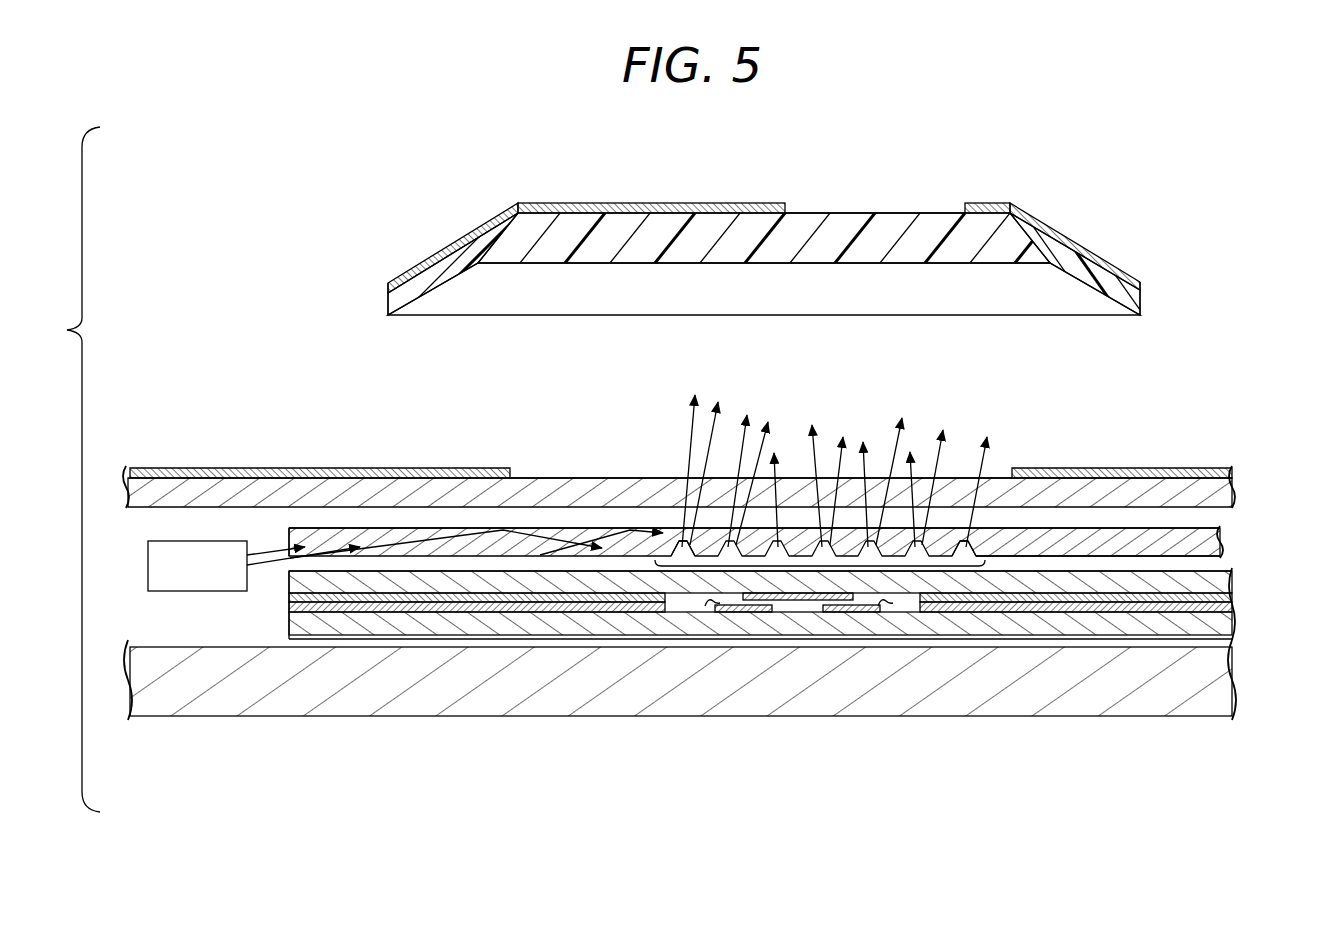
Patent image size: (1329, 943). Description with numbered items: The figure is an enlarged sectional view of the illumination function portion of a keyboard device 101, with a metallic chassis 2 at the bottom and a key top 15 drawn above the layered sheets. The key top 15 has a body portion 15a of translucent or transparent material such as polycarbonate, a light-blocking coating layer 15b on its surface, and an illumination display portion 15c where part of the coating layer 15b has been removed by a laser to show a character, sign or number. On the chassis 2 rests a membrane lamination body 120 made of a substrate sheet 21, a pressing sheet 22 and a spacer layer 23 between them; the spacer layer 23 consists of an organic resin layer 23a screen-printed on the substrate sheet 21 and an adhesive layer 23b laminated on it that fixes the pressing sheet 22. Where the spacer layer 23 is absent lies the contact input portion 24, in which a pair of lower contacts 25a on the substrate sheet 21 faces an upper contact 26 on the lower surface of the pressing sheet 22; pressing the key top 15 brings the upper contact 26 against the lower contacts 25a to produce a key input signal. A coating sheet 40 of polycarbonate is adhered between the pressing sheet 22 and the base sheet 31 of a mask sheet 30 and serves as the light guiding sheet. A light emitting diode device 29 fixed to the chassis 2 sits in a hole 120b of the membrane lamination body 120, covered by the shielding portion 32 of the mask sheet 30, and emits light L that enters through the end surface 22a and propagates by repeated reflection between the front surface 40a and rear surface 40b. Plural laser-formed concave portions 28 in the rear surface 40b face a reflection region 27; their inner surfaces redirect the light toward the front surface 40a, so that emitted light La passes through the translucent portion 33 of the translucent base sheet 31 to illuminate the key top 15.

The chassis 2 is at (368, 702).
The key top 15 is at (764, 246).
The body portion 15a is at (918, 243).
The coating layer 15b is at (660, 203).
The illumination display portion 15c is at (862, 203).
The substrate sheet 21 is at (1195, 625).
The pressing sheet 22 is at (1170, 578).
The end surface 22a is at (287, 540).
The spacer layer 23 is at (760, 707).
The organic resin layer 23a is at (1095, 605).
The adhesive layer 23b is at (1052, 597).
The contact input portion 24 is at (907, 602).
The lower contact 25a is at (705, 603).
The upper contact 26 is at (780, 597).
The reflection region 27 is at (820, 567).
The concave portion 28 is at (682, 548).
The light emitting diode device 29 is at (198, 585).
The mask sheet 30 is at (705, 451).
The base sheet 31 is at (1168, 478).
The shielding portion 32 is at (456, 468).
The translucent portion 33 is at (585, 478).
The coating sheet 40 is at (761, 483).
The front surface 40a is at (1125, 527).
The rear surface 40b is at (1065, 553).
The keyboard device 101 is at (1202, 288).
The membrane lamination body 120 is at (770, 613).
The hole 120b is at (287, 628).
The light L is at (347, 540).
The emitted light La is at (1010, 392).